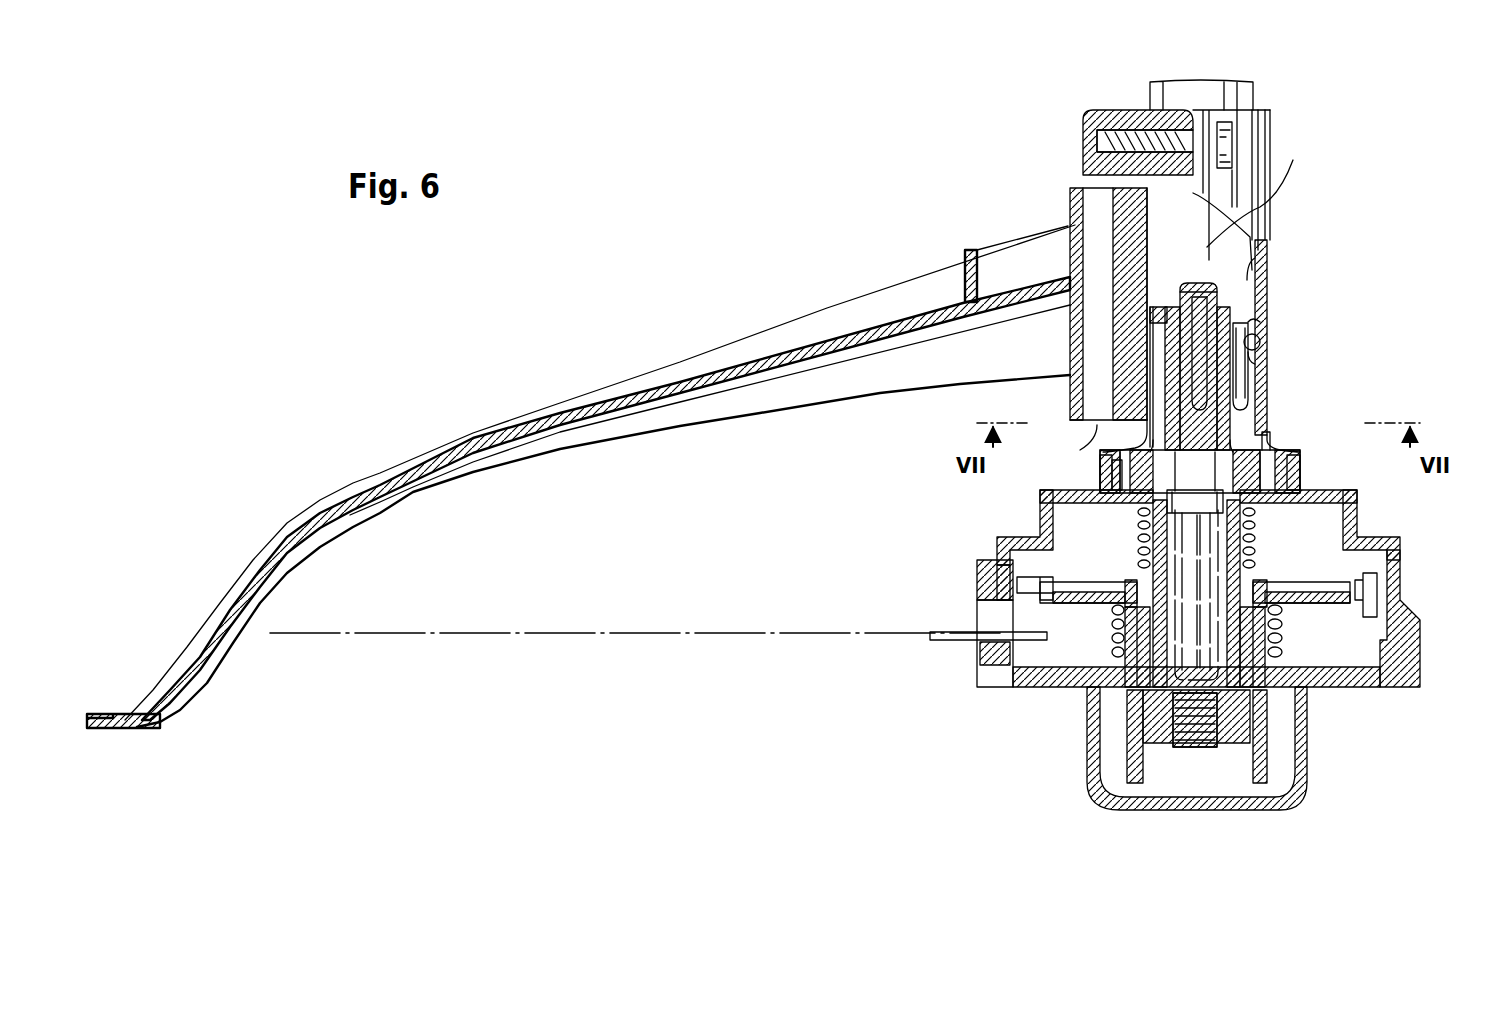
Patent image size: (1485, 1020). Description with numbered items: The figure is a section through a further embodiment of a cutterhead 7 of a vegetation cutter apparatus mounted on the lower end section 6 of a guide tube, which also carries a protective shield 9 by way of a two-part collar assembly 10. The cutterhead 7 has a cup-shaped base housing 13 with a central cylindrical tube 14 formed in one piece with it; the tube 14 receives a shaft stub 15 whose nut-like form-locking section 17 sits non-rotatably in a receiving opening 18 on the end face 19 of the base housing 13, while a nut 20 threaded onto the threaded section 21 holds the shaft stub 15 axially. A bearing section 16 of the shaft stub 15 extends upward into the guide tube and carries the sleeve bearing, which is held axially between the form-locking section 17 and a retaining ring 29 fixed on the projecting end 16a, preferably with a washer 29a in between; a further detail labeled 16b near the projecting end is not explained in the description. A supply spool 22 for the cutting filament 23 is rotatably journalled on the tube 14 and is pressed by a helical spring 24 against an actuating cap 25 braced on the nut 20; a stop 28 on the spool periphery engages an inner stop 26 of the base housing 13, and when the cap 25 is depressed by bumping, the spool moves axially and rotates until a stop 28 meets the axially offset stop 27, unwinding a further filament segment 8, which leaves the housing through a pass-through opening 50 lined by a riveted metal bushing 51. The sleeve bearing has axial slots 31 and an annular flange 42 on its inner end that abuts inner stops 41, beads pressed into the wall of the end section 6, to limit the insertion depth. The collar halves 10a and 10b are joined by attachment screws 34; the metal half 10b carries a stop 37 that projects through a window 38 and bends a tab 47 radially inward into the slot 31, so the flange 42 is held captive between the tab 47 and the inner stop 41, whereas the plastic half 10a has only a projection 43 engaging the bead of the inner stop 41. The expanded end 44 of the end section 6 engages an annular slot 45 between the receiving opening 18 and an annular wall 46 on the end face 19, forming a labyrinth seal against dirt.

The end section 6 is at (1255, 90).
The cutterhead 7 is at (1156, 611).
The filament segment 8 is at (935, 642).
The protective shield 9 is at (860, 333).
The collar assembly 10 is at (1174, 251).
The collar half 10a is at (1085, 157).
The collar half 10b is at (1245, 145).
The base housing 13 is at (1033, 513).
The cylindrical tube 14 is at (1233, 570).
The shaft stub 15 is at (1153, 517).
The bearing section 16 is at (1157, 347).
The projecting end 16a is at (1200, 283).
The stem curve 16b is at (1210, 248).
The form-locking section 17 is at (1247, 507).
The receiving opening 18 is at (1257, 462).
The end face 19 is at (1317, 489).
The nut 20 is at (1250, 730).
The threaded section 21 is at (1195, 745).
The supply spool 22 is at (1350, 688).
The cutting filament 23 is at (1283, 640).
The helical spring 24 is at (1143, 545).
The actuating cap 25 is at (1100, 790).
The inner stop 26 is at (1380, 592).
The stop 27 is at (997, 557).
The stop 28 is at (1023, 585).
The retaining ring 29 is at (1260, 265).
The washer 29a is at (1250, 282).
The slots 31 is at (1160, 373).
The attachment screws 34 is at (1233, 128).
The inner stop 37 is at (1258, 343).
The window 38 is at (1255, 355).
The inner stops 41 is at (1153, 297).
The annular flange 42 is at (1148, 310).
The projection 43 is at (1145, 310).
The expanded end 44 is at (1100, 460).
The annular slot 45 is at (1100, 479).
The annular wall 46 is at (1100, 450).
The tab 47 is at (1250, 330).
The pass-through opening 50 is at (993, 689).
The metal bushing 51 is at (977, 645).